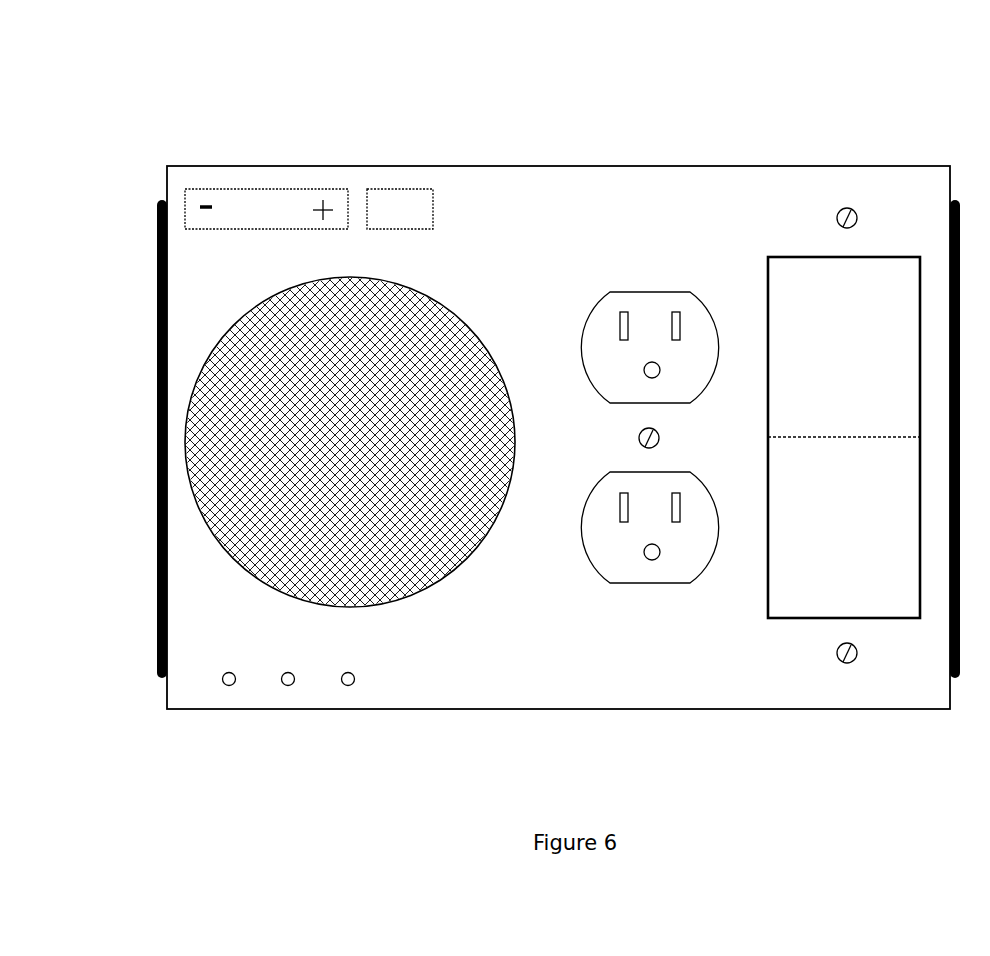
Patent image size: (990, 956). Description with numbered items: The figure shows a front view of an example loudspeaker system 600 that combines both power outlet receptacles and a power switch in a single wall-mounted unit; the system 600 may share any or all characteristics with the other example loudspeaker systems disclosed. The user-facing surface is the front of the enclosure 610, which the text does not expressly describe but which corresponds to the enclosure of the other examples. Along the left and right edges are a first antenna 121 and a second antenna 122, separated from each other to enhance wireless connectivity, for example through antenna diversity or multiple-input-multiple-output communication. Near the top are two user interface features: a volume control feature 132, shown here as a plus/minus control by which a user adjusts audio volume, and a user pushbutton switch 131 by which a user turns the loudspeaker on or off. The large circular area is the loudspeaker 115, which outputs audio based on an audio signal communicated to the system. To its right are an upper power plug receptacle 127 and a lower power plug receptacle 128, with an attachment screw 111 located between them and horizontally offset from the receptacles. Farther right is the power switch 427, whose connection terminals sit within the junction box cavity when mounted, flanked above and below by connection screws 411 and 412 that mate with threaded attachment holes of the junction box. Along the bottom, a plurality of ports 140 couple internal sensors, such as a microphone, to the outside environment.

The loudspeaker system 600 is at (92, 75).
The front panel 610 is at (570, 166).
The first antenna 121 is at (157, 226).
The second antenna 122 is at (948, 225).
The volume control feature 132 is at (266, 189).
The user pushbutton switch 131 is at (400, 189).
The loudspeaker 115 is at (278, 291).
The upper power plug receptacle 127 is at (582, 347).
The lower power plug receptacle 128 is at (588, 500).
The attachment screw 111 is at (659, 441).
The power switch 427 is at (768, 280).
The connection screw 411 is at (837, 222).
The connection screw 412 is at (851, 663).
The ports 140 is at (229, 686).